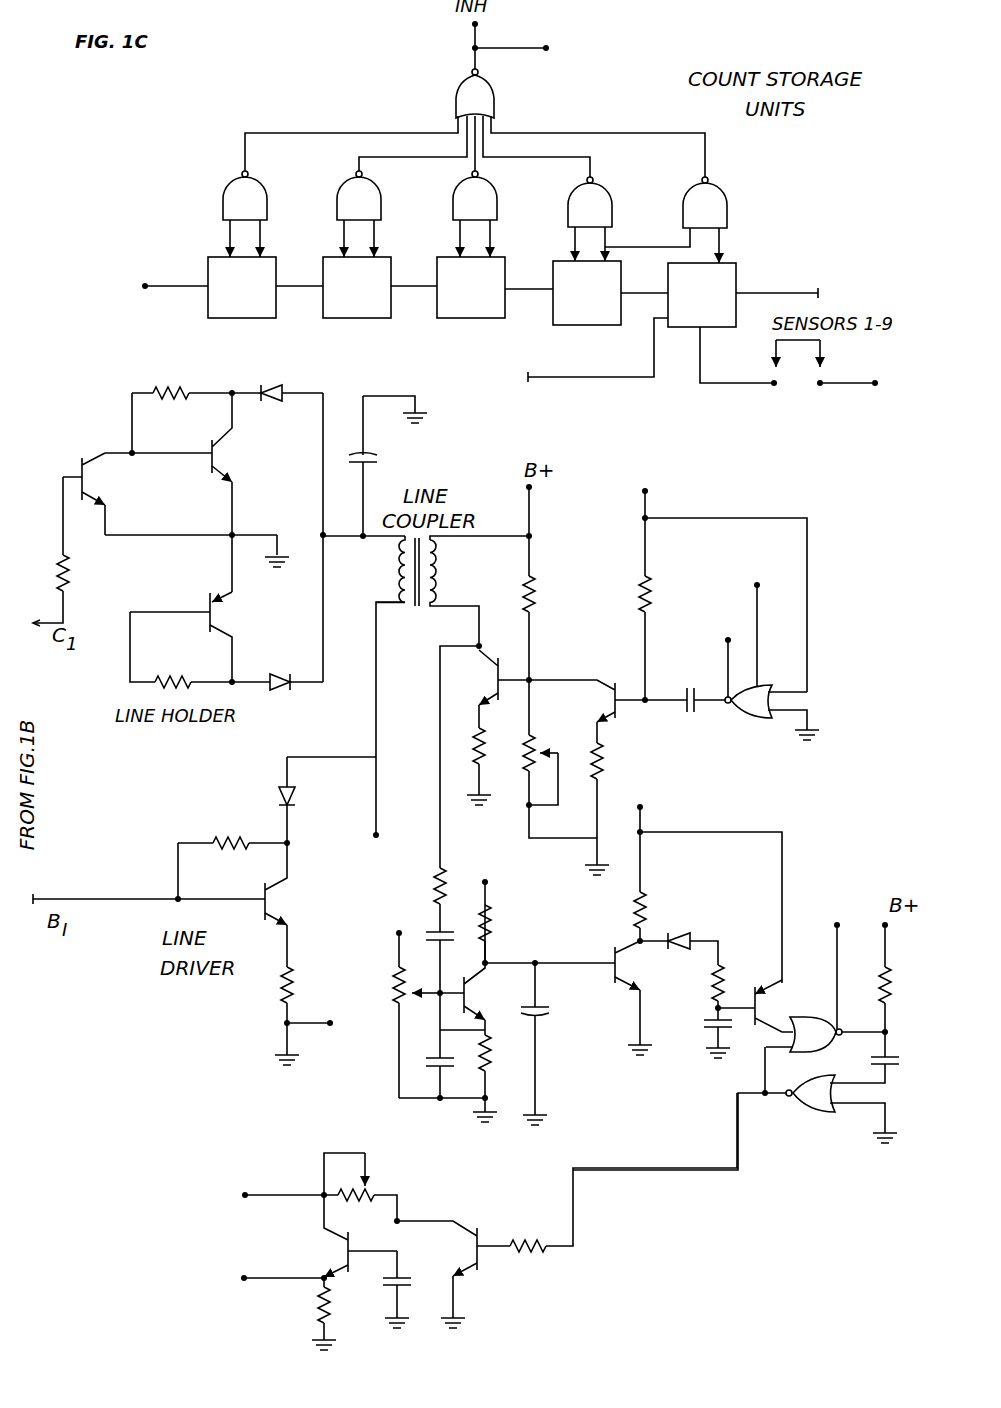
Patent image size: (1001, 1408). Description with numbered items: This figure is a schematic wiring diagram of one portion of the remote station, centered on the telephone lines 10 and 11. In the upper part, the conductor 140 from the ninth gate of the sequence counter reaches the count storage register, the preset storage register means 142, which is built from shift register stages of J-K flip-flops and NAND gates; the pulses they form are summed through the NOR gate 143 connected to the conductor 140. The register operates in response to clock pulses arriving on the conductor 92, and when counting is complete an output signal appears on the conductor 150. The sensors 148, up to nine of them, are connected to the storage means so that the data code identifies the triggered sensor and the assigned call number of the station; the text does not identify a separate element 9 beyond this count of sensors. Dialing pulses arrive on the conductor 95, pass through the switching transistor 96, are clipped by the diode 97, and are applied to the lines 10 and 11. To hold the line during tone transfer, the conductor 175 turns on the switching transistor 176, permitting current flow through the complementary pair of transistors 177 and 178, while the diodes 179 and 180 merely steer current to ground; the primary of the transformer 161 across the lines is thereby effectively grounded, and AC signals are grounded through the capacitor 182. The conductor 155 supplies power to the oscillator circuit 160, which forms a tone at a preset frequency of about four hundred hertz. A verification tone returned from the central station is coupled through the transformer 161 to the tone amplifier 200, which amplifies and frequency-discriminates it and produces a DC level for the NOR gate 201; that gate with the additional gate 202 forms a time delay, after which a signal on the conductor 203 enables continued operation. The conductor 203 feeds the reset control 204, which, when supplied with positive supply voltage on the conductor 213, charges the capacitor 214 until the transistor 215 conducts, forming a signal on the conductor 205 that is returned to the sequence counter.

The conductor 140 is at (522, 47).
The conductor 9 is at (555, 51).
The NOR gate 143 is at (495, 103).
The preset storage register means 142 is at (152, 203).
The conductor 150 is at (159, 283).
The conductor 92 is at (778, 292).
The conductor 205 is at (574, 380).
The sensors 148 is at (776, 386).
The diode 179 is at (280, 387).
The transistor 177 is at (228, 445).
The switching transistor 176 is at (92, 465).
The conductor 175 is at (66, 610).
The transistor 178 is at (228, 616).
The diode 180 is at (285, 696).
The capacitor 182 is at (366, 457).
The transformer 161 is at (430, 612).
The conductor 155 is at (648, 500).
The oscillator circuit 160 is at (838, 525).
The diode 97 is at (278, 793).
The phone line 10 is at (377, 835).
The conductor 95 is at (110, 896).
The switching transistor 96 is at (283, 887).
The conductor 213 is at (398, 952).
The tone amplifier 200 is at (593, 1065).
The gate 202 is at (838, 946).
The NOR gate 201 is at (807, 1018).
The reset control 204 is at (246, 1135).
The conductor 203 is at (633, 1170).
The capacitor 214 is at (400, 1280).
The transistor 215 is at (356, 1262).
The phone line 11 is at (330, 1026).